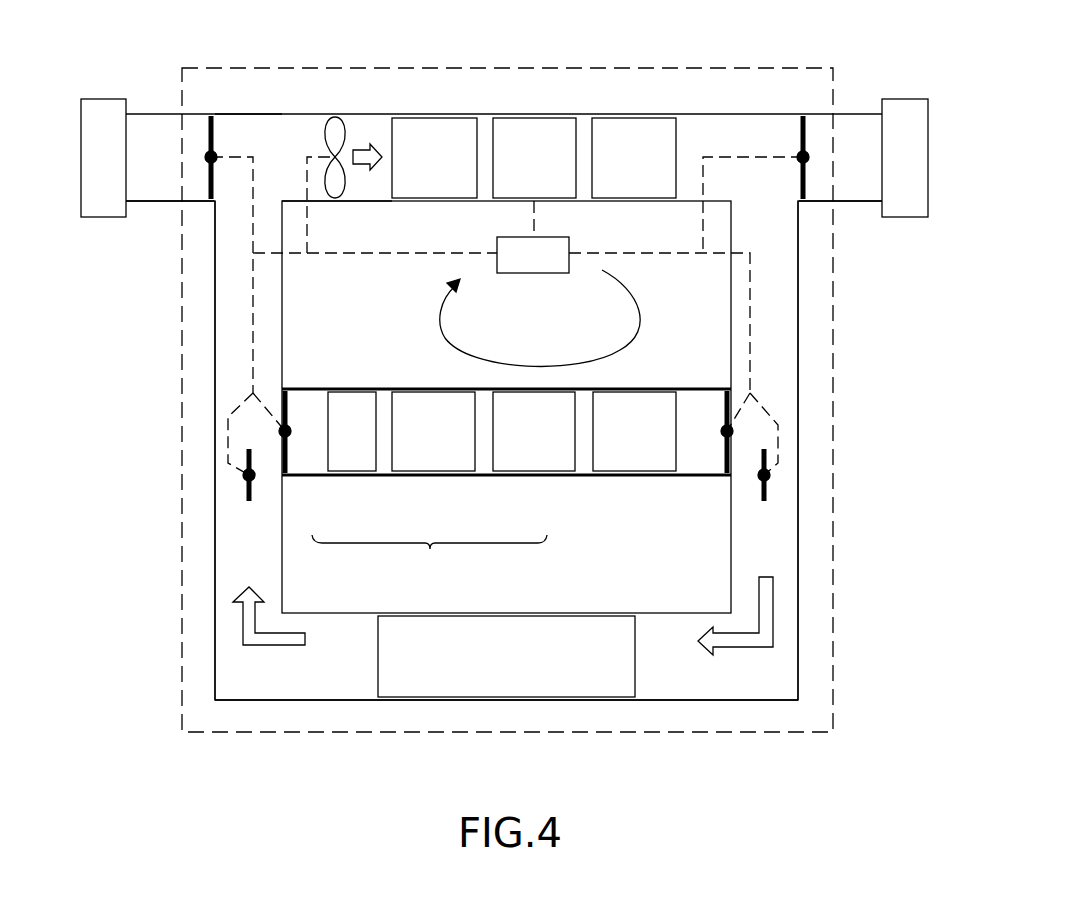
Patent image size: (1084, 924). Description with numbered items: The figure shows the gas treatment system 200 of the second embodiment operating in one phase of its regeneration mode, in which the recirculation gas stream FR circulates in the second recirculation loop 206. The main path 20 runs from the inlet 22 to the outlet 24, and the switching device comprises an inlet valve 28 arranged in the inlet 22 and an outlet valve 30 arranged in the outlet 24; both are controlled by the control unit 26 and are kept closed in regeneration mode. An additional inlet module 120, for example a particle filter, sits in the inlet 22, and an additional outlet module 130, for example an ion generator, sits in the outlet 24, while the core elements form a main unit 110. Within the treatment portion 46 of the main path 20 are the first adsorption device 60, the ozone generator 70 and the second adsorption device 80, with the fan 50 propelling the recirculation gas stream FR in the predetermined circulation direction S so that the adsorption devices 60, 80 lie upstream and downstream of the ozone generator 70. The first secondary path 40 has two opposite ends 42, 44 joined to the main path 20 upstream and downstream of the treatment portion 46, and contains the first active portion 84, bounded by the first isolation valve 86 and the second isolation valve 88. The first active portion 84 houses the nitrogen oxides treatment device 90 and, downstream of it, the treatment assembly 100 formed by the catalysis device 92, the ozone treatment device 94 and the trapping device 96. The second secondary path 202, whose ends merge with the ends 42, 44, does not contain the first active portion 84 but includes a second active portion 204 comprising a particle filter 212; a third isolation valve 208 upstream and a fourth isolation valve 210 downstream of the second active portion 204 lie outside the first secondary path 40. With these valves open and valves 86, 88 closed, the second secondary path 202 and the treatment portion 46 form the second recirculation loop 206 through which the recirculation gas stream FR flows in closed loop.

The main path 20 is at (293, 124).
The inlet 22 is at (197, 192).
The outlet 24 is at (818, 190).
The control unit 26 is at (542, 265).
The inlet valve 28 is at (214, 126).
The outlet valve 30 is at (800, 128).
The first secondary path 40 is at (273, 337).
The end of secondary path 42 is at (235, 217).
The end of secondary path 44 is at (790, 218).
The treatment portion 46 is at (367, 190).
The fan 50 is at (347, 117).
The first adsorption device 60 is at (423, 123).
The ozone generator 70 is at (530, 123).
The second adsorption device 80 is at (625, 123).
The first active portion 84 is at (582, 460).
The first isolation valve 86 is at (720, 408).
The second isolation valve 88 is at (288, 400).
The nitrogen oxides treatment device 90 is at (639, 457).
The catalysis device 92 is at (541, 457).
The ozone treatment device 94 is at (447, 457).
The trapping device 96 is at (352, 462).
The treatment assembly 100 is at (429, 557).
The main unit 110 is at (835, 476).
The additional inlet module 120 is at (100, 104).
The additional outlet module 130 is at (905, 104).
The gas treatment system 200 is at (148, 350).
The second secondary path 202 is at (758, 325).
The second active portion 204 is at (323, 632).
The second recirculation loop 206 is at (232, 525).
The third isolation valve 208 is at (767, 490).
The fourth isolation valve 210 is at (242, 488).
The particle filter 212 is at (548, 680).
The predetermined circulation direction S is at (640, 302).
The recirculation gas stream FR is at (372, 130).